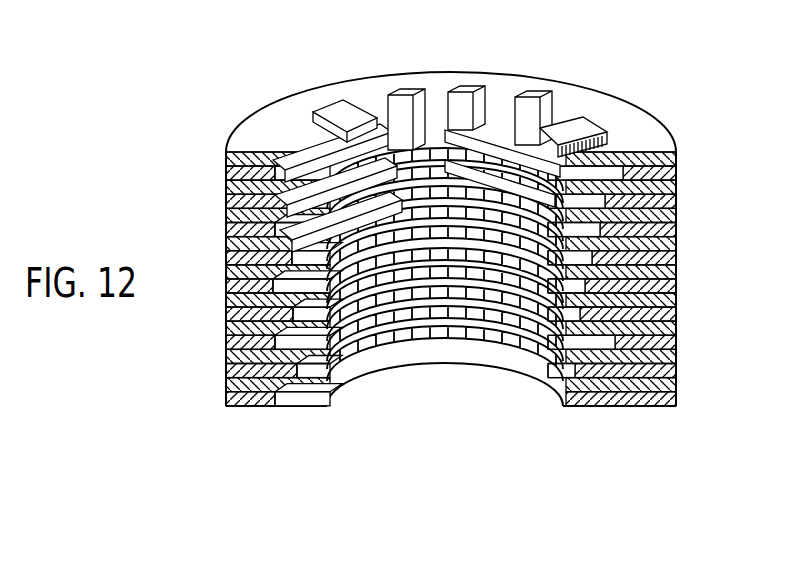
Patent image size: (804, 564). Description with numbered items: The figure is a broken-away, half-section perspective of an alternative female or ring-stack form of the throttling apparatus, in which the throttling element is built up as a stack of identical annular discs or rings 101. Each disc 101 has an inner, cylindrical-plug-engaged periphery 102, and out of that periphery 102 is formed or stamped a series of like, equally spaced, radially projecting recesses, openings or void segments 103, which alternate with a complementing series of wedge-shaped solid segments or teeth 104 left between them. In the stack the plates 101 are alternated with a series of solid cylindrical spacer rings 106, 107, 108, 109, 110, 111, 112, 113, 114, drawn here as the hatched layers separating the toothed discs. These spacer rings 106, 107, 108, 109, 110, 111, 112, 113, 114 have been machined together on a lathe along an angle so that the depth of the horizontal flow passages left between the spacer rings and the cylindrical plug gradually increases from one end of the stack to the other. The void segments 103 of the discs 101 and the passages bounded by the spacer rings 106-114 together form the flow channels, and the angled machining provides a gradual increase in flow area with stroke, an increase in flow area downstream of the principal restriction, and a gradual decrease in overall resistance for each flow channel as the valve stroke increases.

The annular disc 101 is at (642, 138).
The inner cylindrical-plug-engaged periphery 102 is at (440, 120).
The radially projecting void segment 103 is at (337, 103).
The wedge-shaped solid segment 104 is at (547, 118).
The solid cylindrical spacer ring 106 is at (675, 397).
The solid cylindrical spacer ring 107 is at (675, 375).
The solid cylindrical spacer ring 108 is at (667, 347).
The solid cylindrical spacer ring 109 is at (675, 320).
The solid cylindrical spacer ring 110 is at (670, 293).
The solid cylindrical spacer ring 111 is at (675, 263).
The solid cylindrical spacer ring 112 is at (677, 232).
The solid cylindrical spacer ring 113 is at (675, 203).
The solid cylindrical spacer ring 114 is at (675, 168).